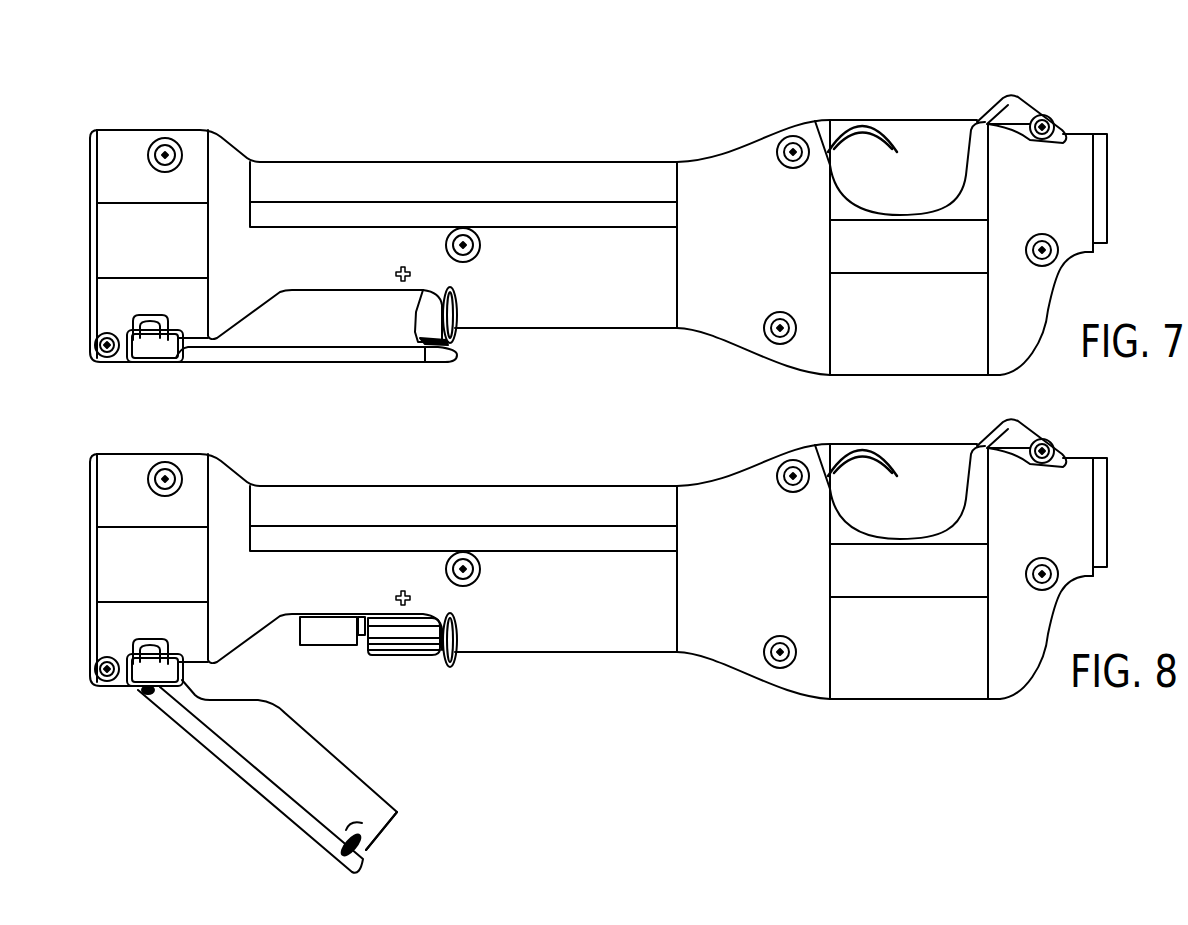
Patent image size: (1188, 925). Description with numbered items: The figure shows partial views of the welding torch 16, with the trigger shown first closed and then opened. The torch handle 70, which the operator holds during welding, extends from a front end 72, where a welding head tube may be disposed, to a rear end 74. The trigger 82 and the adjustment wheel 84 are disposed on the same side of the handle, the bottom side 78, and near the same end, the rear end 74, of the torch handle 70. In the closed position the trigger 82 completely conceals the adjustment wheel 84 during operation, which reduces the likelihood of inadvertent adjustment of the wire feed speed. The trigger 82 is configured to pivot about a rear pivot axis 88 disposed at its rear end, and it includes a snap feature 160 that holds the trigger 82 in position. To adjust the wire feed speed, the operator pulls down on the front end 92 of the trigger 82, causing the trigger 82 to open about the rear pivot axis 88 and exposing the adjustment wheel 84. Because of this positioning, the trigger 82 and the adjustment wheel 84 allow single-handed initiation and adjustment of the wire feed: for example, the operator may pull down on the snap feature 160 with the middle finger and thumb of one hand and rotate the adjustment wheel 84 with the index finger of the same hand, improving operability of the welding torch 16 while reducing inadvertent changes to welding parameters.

In FIG. 7, the welding torch 16 is at (653, 122).
In FIG. 8, the welding torch 16 is at (718, 440).
In FIG. 7, the torch handle 70 is at (481, 161).
In FIG. 8, the torch handle 70 is at (481, 485).
In FIG. 7, the front end 72 is at (1110, 138).
In FIG. 8, the front end 72 is at (1110, 462).
In FIG. 7, the rear end 74 is at (90, 147).
In FIG. 8, the rear end 74 is at (90, 471).
In FIG. 7, the bottom side 78 is at (621, 352).
In FIG. 8, the bottom side 78 is at (648, 694).
In FIG. 7, the trigger 82 is at (329, 362).
In FIG. 8, the trigger 82 is at (237, 773).
In FIG. 8, the adjustment wheel 84 is at (403, 657).
In FIG. 7, the rear pivot axis 88 is at (151, 374).
In FIG. 8, the rear pivot axis 88 is at (143, 709).
In FIG. 7, the front end 92 is at (440, 363).
In FIG. 8, the front end 92 is at (348, 867).
In FIG. 8, the snap feature 160 is at (412, 810).